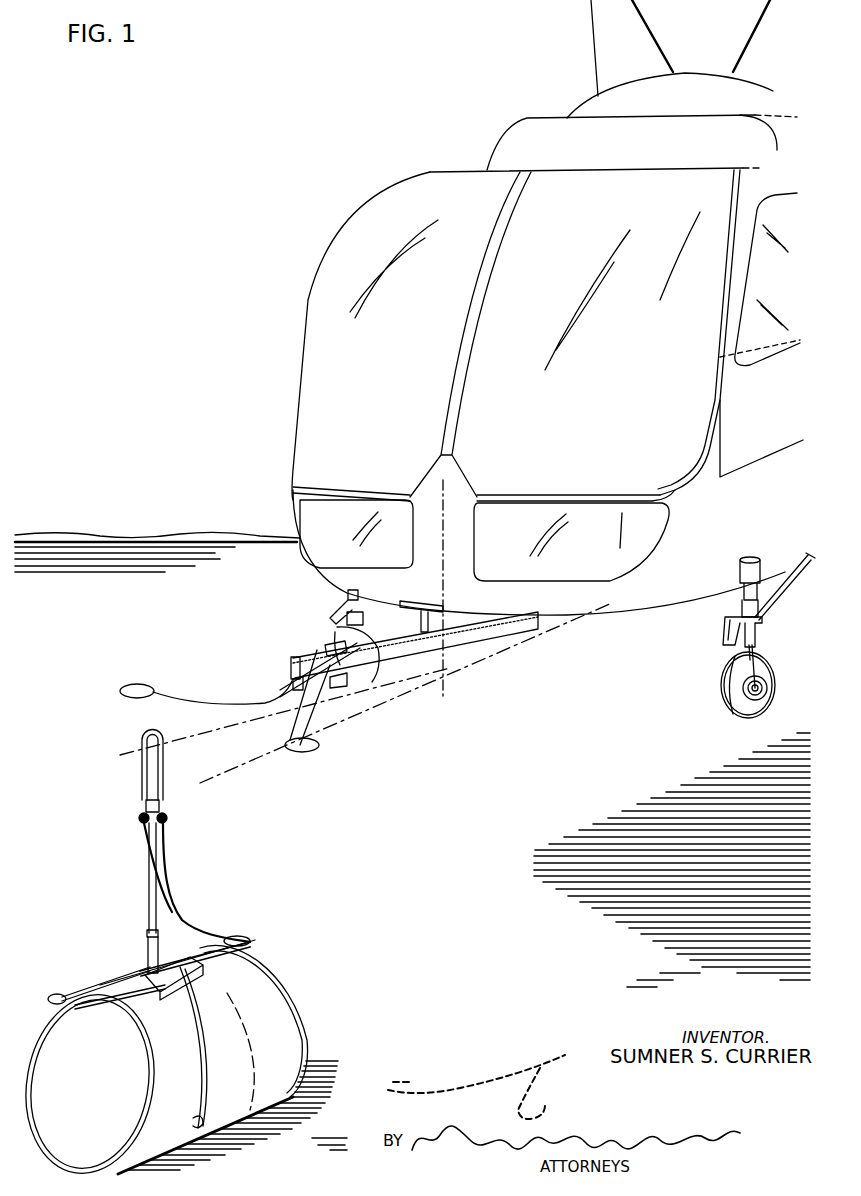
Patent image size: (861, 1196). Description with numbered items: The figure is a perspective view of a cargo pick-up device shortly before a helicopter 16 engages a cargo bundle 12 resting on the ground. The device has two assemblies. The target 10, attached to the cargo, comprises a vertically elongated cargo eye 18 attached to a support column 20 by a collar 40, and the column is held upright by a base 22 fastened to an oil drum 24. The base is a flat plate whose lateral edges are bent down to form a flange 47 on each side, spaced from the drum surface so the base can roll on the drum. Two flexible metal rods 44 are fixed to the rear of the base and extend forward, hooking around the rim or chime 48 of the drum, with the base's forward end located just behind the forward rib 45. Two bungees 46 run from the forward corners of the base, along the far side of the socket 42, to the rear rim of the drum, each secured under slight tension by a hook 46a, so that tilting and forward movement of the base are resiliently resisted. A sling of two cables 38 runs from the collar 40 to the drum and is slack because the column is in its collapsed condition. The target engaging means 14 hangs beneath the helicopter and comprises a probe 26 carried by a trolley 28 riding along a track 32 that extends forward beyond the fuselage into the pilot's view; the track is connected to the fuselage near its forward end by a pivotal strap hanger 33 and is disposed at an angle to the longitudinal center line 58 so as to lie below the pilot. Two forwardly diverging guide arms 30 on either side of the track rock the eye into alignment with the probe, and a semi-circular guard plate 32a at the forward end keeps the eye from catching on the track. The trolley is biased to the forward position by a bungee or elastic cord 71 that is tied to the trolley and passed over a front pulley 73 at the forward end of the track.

The target 10 is at (213, 849).
The cargo bundle 12 is at (362, 1002).
The target engaging means 14 is at (375, 741).
The helicopter 16 is at (255, 324).
The cargo eye 18 is at (142, 776).
The support column 20 is at (145, 888).
The base 22 is at (147, 957).
The oil drum 24 is at (95, 1096).
The probe 26 is at (280, 720).
The trolley 28 is at (363, 687).
The guide arms 30 is at (178, 698).
The track 32 is at (305, 648).
The guard plate 32a is at (290, 676).
The strap hanger 33 is at (420, 620).
The cables 38 is at (177, 912).
The collar 40 is at (145, 811).
The socket 42 is at (147, 935).
The flexible metal rods 44 is at (103, 968).
The forward rib 45 is at (198, 1128).
The bungees 46 is at (213, 953).
The hook 46a is at (255, 944).
The flange 47 is at (170, 983).
The rim or chime 48 is at (57, 996).
The longitudinal center line 58 is at (518, 648).
The bungee or elastic cord 71 is at (460, 632).
The front pulley 73 is at (292, 667).